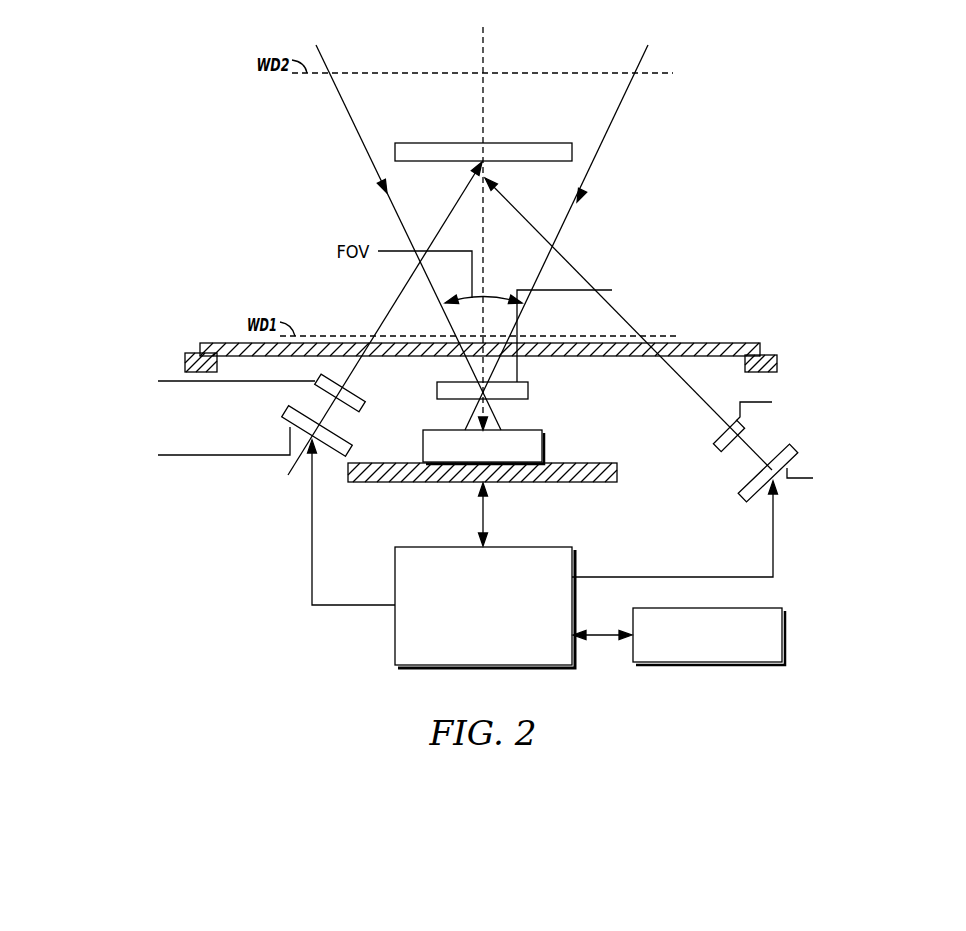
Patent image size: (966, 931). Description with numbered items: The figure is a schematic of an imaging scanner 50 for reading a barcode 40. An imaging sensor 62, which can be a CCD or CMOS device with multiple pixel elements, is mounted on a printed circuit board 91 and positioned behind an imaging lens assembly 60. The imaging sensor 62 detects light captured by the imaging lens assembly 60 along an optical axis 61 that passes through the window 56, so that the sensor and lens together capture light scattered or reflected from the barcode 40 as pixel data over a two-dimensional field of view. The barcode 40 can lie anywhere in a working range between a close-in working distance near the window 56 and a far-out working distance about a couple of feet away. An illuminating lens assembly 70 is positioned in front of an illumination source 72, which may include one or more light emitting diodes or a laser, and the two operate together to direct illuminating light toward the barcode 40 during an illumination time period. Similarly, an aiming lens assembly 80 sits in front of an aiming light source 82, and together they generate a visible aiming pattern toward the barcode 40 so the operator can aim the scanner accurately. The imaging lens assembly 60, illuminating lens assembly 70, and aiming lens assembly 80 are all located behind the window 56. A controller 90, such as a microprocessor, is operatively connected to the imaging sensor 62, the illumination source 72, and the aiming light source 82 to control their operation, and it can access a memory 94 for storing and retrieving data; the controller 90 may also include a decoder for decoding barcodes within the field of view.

The barcode 40 is at (533, 143).
The imaging scanner 50 is at (617, 195).
The window 56 is at (213, 343).
The imaging lens assembly 60 is at (437, 388).
The optical axis 61 is at (484, 40).
The imaging sensor 62 is at (423, 446).
The illuminating lens assembly 70 is at (852, 381).
The illumination source 72 is at (893, 505).
The aiming lens assembly 80 is at (73, 356).
The aiming light source 82 is at (86, 480).
The controller 90 is at (395, 573).
The printed circuit board 91 is at (563, 483).
The memory 94 is at (769, 608).